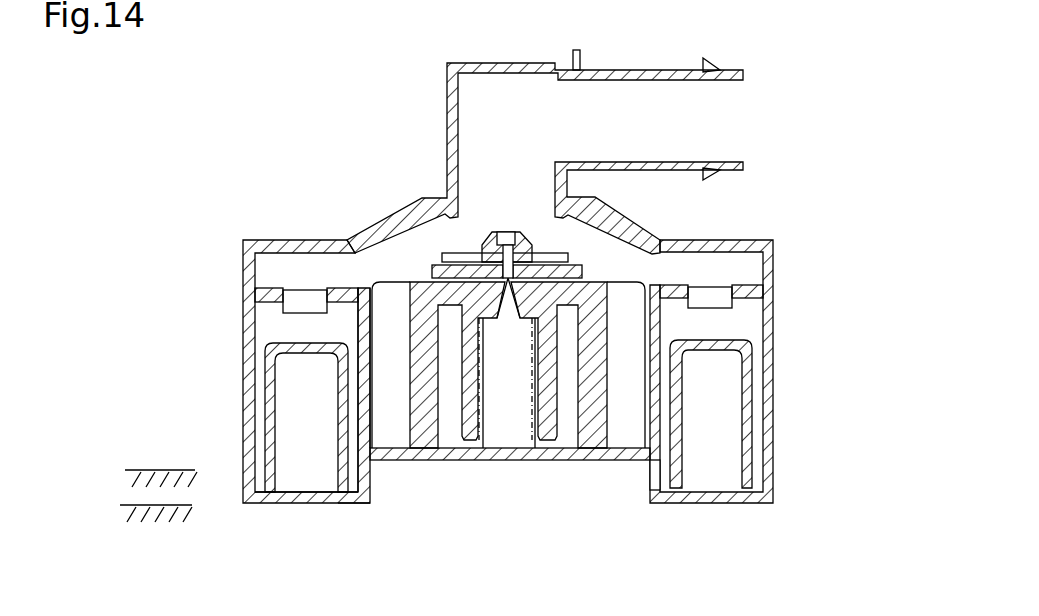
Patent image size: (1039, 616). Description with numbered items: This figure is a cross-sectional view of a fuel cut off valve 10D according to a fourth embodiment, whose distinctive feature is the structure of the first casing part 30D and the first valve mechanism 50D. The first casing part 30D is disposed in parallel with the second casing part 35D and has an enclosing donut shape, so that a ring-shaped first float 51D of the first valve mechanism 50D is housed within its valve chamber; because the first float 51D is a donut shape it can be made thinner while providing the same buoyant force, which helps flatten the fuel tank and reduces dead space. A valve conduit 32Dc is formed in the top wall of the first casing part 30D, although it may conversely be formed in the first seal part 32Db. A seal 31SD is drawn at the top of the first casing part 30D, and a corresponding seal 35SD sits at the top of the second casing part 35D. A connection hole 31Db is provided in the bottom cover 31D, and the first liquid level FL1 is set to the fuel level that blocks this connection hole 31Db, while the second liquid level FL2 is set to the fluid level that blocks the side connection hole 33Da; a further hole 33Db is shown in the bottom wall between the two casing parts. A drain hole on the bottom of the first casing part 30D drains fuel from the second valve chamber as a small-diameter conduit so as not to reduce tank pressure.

The fuel cut off valve 10D is at (337, 163).
The first casing part 30D is at (243, 345).
The bottom cover 31D is at (298, 505).
The connection hole 31Db is at (350, 505).
The seal member 31SD is at (243, 300).
The first seal part 32Db is at (268, 323).
The valve conduit 32Dc is at (347, 300).
The side connection hole 33Da is at (650, 480).
The communication hole 33Db is at (372, 455).
The second casing part 35D is at (775, 258).
The seal member 35SD is at (602, 266).
The first valve mechanism 50D is at (225, 417).
The first float 51D is at (268, 418).
The first liquid level FL1 is at (150, 505).
The second liquid level FL2 is at (157, 470).